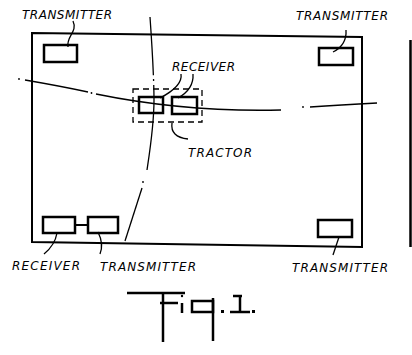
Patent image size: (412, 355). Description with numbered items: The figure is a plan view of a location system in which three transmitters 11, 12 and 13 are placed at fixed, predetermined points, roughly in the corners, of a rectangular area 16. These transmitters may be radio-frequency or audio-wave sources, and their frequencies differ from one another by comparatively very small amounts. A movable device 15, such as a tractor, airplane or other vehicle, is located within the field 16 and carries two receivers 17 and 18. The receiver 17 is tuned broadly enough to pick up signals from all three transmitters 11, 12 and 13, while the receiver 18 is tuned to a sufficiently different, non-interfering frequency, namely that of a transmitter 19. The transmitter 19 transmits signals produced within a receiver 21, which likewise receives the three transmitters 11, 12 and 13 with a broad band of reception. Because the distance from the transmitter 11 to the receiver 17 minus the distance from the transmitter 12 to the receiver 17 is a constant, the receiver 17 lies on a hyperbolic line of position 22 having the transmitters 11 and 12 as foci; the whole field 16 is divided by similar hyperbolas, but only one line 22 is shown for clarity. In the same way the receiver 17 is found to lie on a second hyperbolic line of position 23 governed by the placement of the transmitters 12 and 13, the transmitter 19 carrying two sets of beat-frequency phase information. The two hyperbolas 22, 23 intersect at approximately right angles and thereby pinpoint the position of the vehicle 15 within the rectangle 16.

The transmitter 11 is at (70, 58).
The transmitter 12 is at (325, 66).
The transmitter 13 is at (332, 223).
The movable device 15 is at (204, 91).
The rectangular area 16 is at (250, 37).
The receiver 17 is at (146, 114).
The receiver 18 is at (204, 119).
The transmitter 19 is at (112, 217).
The receiver 21 is at (63, 217).
The hyperbolic line of position 22 is at (147, 166).
The hyperbolic line of position 23 is at (283, 110).